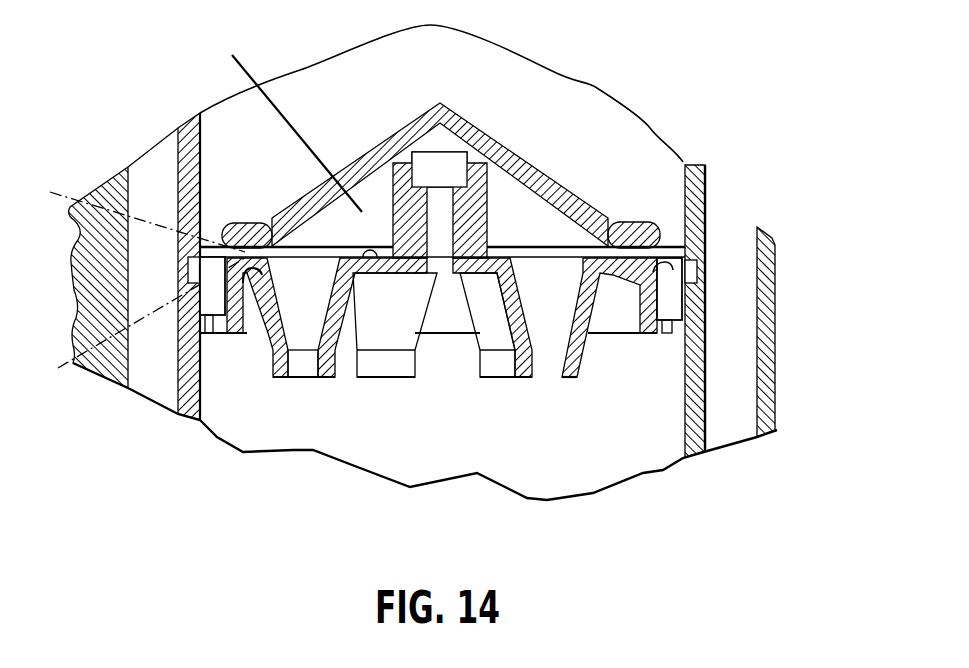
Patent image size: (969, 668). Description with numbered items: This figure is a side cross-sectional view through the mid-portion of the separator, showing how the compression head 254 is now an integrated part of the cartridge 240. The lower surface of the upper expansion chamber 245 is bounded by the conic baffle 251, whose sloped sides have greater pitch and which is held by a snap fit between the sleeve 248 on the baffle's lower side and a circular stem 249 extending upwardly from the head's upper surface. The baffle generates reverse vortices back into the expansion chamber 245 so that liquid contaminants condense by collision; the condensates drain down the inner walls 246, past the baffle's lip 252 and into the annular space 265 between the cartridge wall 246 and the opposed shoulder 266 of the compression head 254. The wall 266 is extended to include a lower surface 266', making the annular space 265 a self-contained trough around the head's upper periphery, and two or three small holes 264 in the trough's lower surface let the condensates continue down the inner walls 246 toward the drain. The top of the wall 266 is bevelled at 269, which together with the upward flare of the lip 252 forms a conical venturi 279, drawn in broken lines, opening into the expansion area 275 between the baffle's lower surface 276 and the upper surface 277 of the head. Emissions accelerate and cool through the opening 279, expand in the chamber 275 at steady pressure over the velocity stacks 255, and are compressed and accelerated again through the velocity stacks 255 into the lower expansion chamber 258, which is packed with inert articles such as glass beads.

The cartridge 240 is at (708, 403).
The expansion chamber 245 is at (457, 78).
The inner walls 246 is at (200, 170).
The sleeve 248 is at (532, 210).
The circular stem 249 is at (414, 213).
The conic baffle 251 is at (462, 160).
The lip 252 is at (215, 238).
The compression head 254 is at (530, 333).
The velocity stacks 255 is at (302, 335).
The expansion chamber 258 is at (470, 423).
The small holes 264 is at (212, 335).
The annular space 265 is at (677, 290).
The shoulder 266 is at (709, 310).
The lower surface 266' is at (429, 390).
The bevel 269 is at (653, 272).
The expansion area 275 is at (278, 115).
The lower surface 276 is at (487, 203).
The upper surface 277 is at (377, 257).
The venturi 279 is at (121, 200).